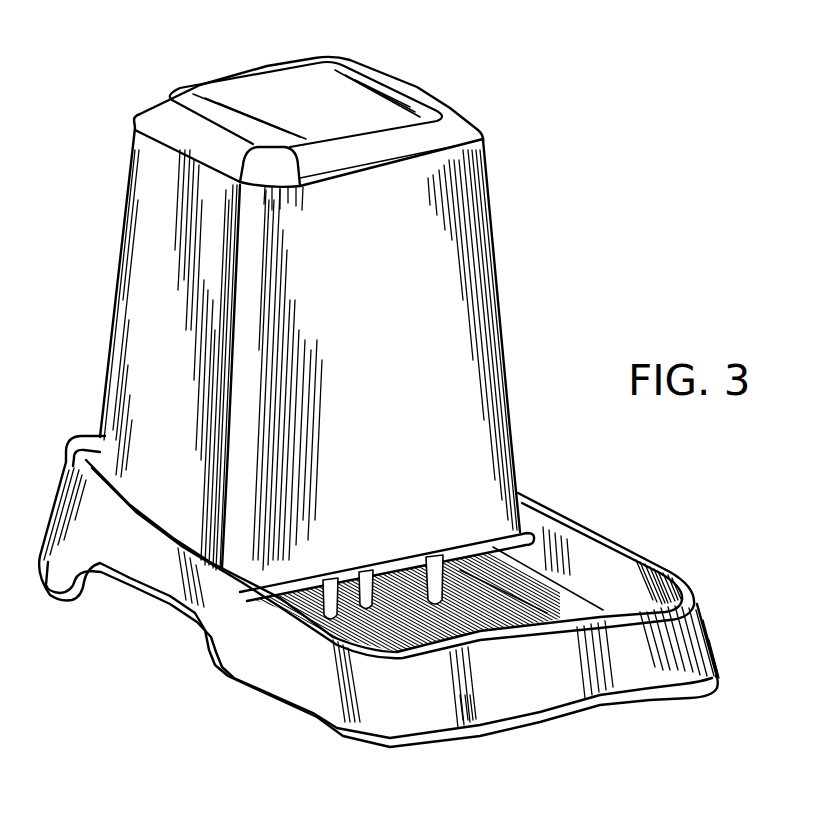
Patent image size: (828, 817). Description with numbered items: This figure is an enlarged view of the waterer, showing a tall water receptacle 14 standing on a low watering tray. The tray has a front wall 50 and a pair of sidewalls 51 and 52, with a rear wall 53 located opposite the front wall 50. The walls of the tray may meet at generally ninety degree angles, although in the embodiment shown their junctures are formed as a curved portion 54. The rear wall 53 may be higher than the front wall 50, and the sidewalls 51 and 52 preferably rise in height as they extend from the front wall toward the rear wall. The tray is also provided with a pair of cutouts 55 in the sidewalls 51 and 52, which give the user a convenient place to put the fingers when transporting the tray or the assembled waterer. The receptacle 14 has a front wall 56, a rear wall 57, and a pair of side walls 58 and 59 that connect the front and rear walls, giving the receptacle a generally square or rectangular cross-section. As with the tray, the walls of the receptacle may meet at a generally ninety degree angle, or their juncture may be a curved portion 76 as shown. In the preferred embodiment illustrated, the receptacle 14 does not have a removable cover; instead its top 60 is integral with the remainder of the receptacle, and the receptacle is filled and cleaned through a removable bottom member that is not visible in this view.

The receptacle 14 is at (127, 197).
The front wall 50 is at (540, 699).
The sidewall 51 is at (290, 656).
The sidewall 52 is at (610, 584).
The rear wall 53 is at (83, 437).
The curved portion 54 is at (412, 706).
The cutouts 55 is at (135, 593).
The front wall 56 is at (392, 301).
The rear wall 57 is at (280, 72).
The side wall 58 is at (197, 281).
The side wall 59 is at (417, 87).
The top 60 is at (341, 106).
The curved portion 76 is at (503, 293).